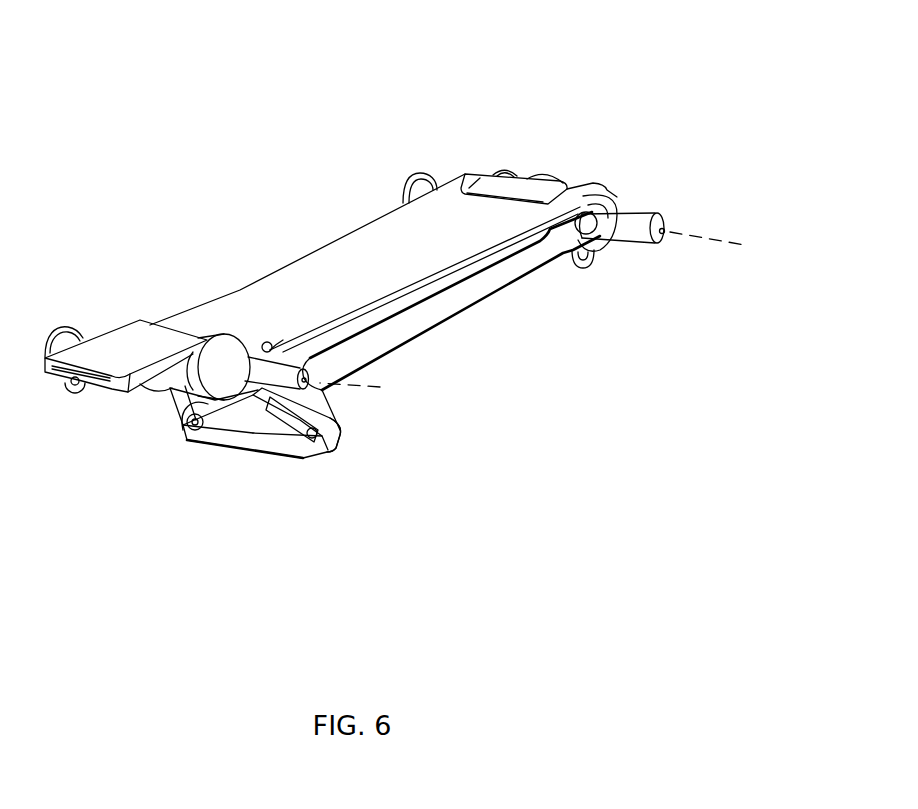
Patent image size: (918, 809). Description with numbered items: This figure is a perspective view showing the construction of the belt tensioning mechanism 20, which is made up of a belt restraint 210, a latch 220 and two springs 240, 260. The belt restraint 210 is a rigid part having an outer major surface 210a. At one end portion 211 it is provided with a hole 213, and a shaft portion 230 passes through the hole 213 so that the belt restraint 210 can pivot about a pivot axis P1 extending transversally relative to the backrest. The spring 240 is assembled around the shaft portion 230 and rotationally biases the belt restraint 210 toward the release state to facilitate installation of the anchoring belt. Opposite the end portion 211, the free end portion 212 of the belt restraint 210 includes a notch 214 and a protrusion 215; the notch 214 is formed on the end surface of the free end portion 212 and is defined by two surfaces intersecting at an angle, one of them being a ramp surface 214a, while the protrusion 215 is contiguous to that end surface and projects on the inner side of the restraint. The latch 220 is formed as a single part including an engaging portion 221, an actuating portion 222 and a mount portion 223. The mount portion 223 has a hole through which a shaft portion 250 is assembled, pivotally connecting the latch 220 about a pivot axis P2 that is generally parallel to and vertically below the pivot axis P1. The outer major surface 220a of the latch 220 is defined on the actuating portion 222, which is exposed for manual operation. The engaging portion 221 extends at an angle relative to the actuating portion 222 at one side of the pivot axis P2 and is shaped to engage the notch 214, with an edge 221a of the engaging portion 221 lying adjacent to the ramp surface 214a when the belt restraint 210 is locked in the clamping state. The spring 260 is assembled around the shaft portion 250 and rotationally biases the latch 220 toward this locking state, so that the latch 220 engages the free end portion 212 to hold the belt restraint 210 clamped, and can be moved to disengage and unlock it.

The belt tensioning mechanism 20 is at (38, 66).
The belt restraint 210 is at (313, 288).
The outer major surface 210a is at (378, 235).
The end portion 211 is at (505, 184).
The free end portion 212 is at (222, 316).
The hole 213 is at (590, 235).
The notch 214 is at (223, 420).
The ramp surface 214a is at (242, 418).
The protrusion 215 is at (317, 445).
The latch 220 is at (125, 316).
The outer major surface 220a is at (108, 343).
The engaging portion 221 is at (273, 412).
The edge 221a is at (255, 410).
The actuating portion 222 is at (102, 378).
The mount portion 223 is at (195, 430).
The shaft portion 230 is at (627, 222).
The spring 240 is at (585, 267).
The shaft portion 250 is at (310, 388).
The spring 260 is at (180, 422).
The pivot axis P1 is at (682, 232).
The pivot axis P2 is at (370, 388).